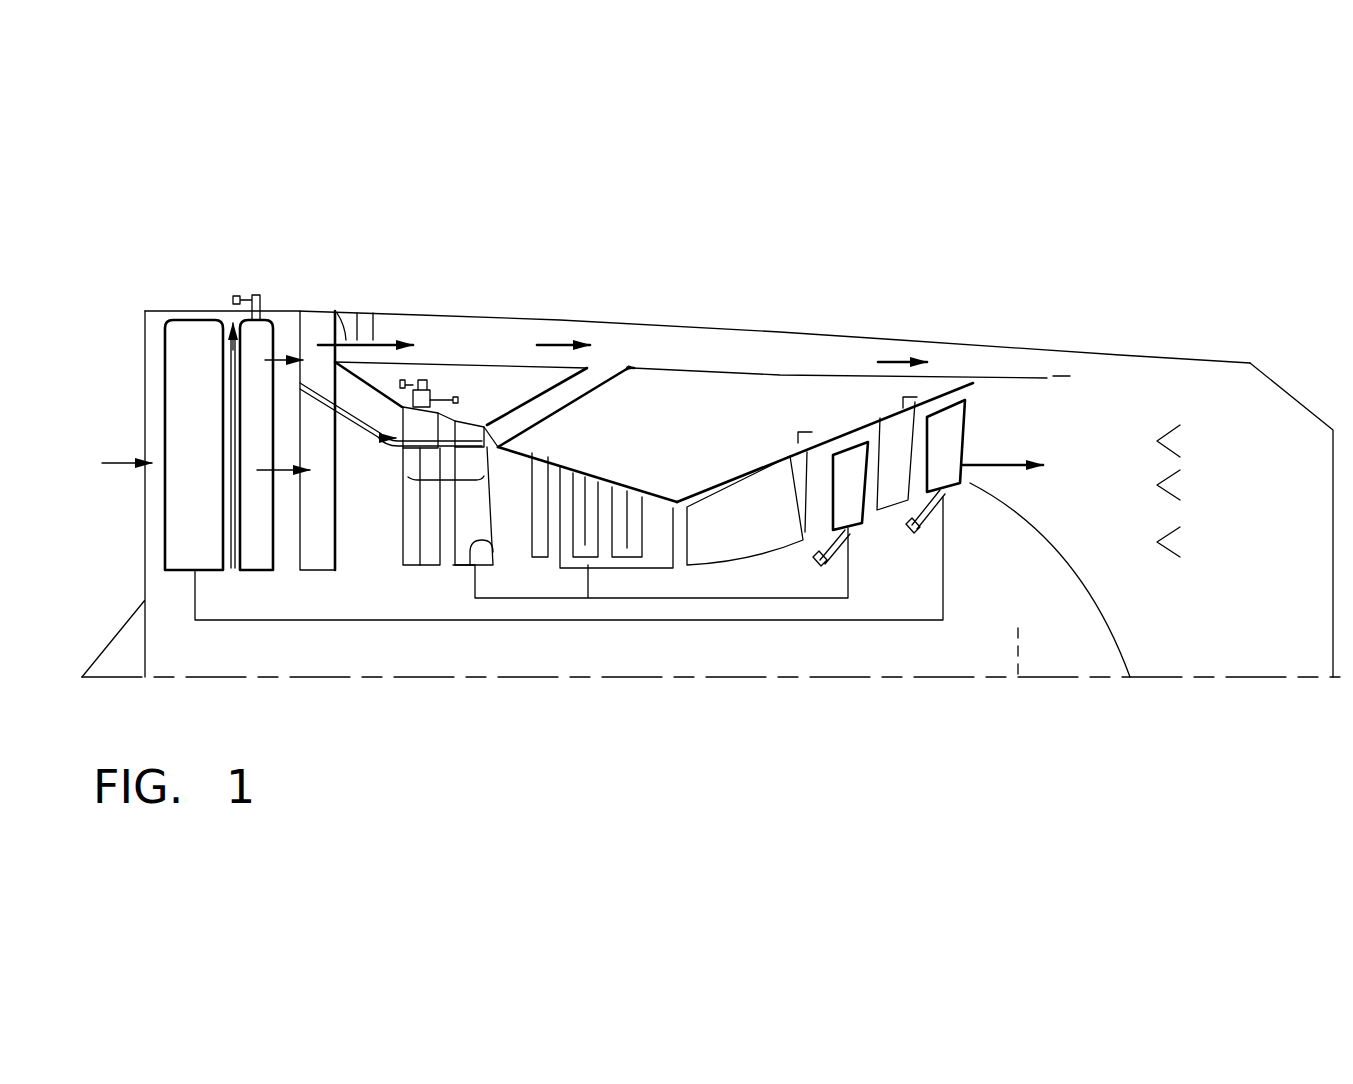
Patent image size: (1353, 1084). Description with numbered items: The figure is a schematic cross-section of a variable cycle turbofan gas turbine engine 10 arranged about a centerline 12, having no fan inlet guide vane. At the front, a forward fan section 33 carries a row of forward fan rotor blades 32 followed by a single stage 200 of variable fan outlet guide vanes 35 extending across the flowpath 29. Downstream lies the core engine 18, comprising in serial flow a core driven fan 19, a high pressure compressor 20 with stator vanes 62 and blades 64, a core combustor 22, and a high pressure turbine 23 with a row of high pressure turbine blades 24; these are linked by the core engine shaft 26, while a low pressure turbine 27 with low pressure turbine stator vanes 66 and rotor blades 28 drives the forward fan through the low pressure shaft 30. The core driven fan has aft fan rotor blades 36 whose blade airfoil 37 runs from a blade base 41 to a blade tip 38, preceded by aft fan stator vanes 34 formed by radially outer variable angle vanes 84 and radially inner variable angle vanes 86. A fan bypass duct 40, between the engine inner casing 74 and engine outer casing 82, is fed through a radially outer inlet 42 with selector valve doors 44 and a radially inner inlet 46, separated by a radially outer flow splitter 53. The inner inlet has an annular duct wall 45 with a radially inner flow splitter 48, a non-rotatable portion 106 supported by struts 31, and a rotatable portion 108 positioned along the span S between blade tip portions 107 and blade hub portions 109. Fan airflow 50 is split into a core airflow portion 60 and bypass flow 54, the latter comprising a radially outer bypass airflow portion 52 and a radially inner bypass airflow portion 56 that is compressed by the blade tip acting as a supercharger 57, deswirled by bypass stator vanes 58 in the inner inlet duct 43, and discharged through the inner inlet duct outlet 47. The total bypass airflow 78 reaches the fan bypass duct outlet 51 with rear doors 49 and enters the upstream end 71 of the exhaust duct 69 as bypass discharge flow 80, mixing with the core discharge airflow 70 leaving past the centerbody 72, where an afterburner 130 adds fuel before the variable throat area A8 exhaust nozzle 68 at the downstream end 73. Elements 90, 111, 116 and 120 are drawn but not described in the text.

The turbofan gas turbine engine 10 is at (677, 305).
The centerline 12 is at (1018, 627).
The core engine 18 is at (713, 466).
The core driven fan 19 is at (436, 612).
The high pressure compressor 20 is at (598, 467).
The core combustor 22 is at (752, 532).
The high pressure turbine 23 is at (815, 540).
The high pressure turbine blades 24 is at (857, 450).
The core engine shaft 26 is at (617, 599).
The low pressure turbine 27 is at (899, 510).
The low pressure turbine rotor blades 28 is at (967, 443).
The flowpath 29 is at (345, 547).
The low pressure shaft 30 is at (805, 621).
The struts 31 is at (304, 517).
The forward fan rotor blades 32 is at (178, 424).
The forward fan section 33 is at (219, 607).
The aft fan stator vanes 34 is at (412, 567).
The variable fan outlet guide vanes 35 is at (244, 500).
The aft fan rotor blades 36 is at (472, 565).
The blade airfoil 37 is at (474, 522).
The blade tip 38 is at (466, 428).
The fan bypass duct 40 is at (826, 357).
The blade base 41 is at (485, 541).
The radially outer inlet 42 is at (357, 333).
The inner inlet duct 43 is at (610, 372).
The selector valve doors 44 is at (345, 318).
The annular duct wall 45 is at (450, 480).
The radially inner inlet 46 is at (398, 417).
The inner inlet duct outlet 47 is at (631, 368).
The radially inner flow splitter 48 is at (298, 390).
The rear doors 49 is at (1035, 377).
The fan airflow 50 is at (112, 463).
The fan bypass duct outlet 51 is at (977, 358).
The radially outer bypass airflow portion 52 is at (373, 333).
The radially outer flow splitter 53 is at (338, 357).
The bypass flow 54 is at (265, 360).
The radially inner bypass airflow portion 56 is at (386, 438).
The supercharger 57 is at (508, 446).
The bypass stator vanes 58 is at (568, 400).
The core airflow portion 60 is at (260, 468).
The high pressure compressor stator vanes 62 is at (617, 500).
The high pressure compressor blades 64 is at (606, 493).
The low pressure turbine stator vanes 66 is at (902, 447).
The exhaust nozzle 68 is at (1258, 365).
The exhaust duct 69 is at (1155, 410).
The core discharge airflow 70 is at (993, 468).
The upstream end 71 is at (1083, 356).
The centerbody 72 is at (1068, 558).
The downstream end 73 is at (1246, 380).
The engine inner casing 74 is at (751, 374).
The total bypass airflow 78 is at (891, 361).
The bypass discharge flow 80 is at (1100, 410).
The engine outer casing 82 is at (738, 330).
The radially outer variable angle vanes 84 is at (432, 418).
The radially inner variable angle vanes 86 is at (397, 555).
The control line 90 is at (430, 543).
The non-rotatable portion 106 is at (405, 450).
The blade tip portions 107 is at (457, 426).
The rotatable portion 108 is at (519, 453).
The blade hub portions 109 is at (481, 553).
The fan casing 111 is at (538, 318).
The actuator link 116 is at (829, 570).
The sensor 120 is at (445, 410).
The afterburner 130 is at (1170, 570).
The single stage 200 is at (258, 285).
The variable throat area A8 is at (1332, 566).
The span S is at (232, 520).